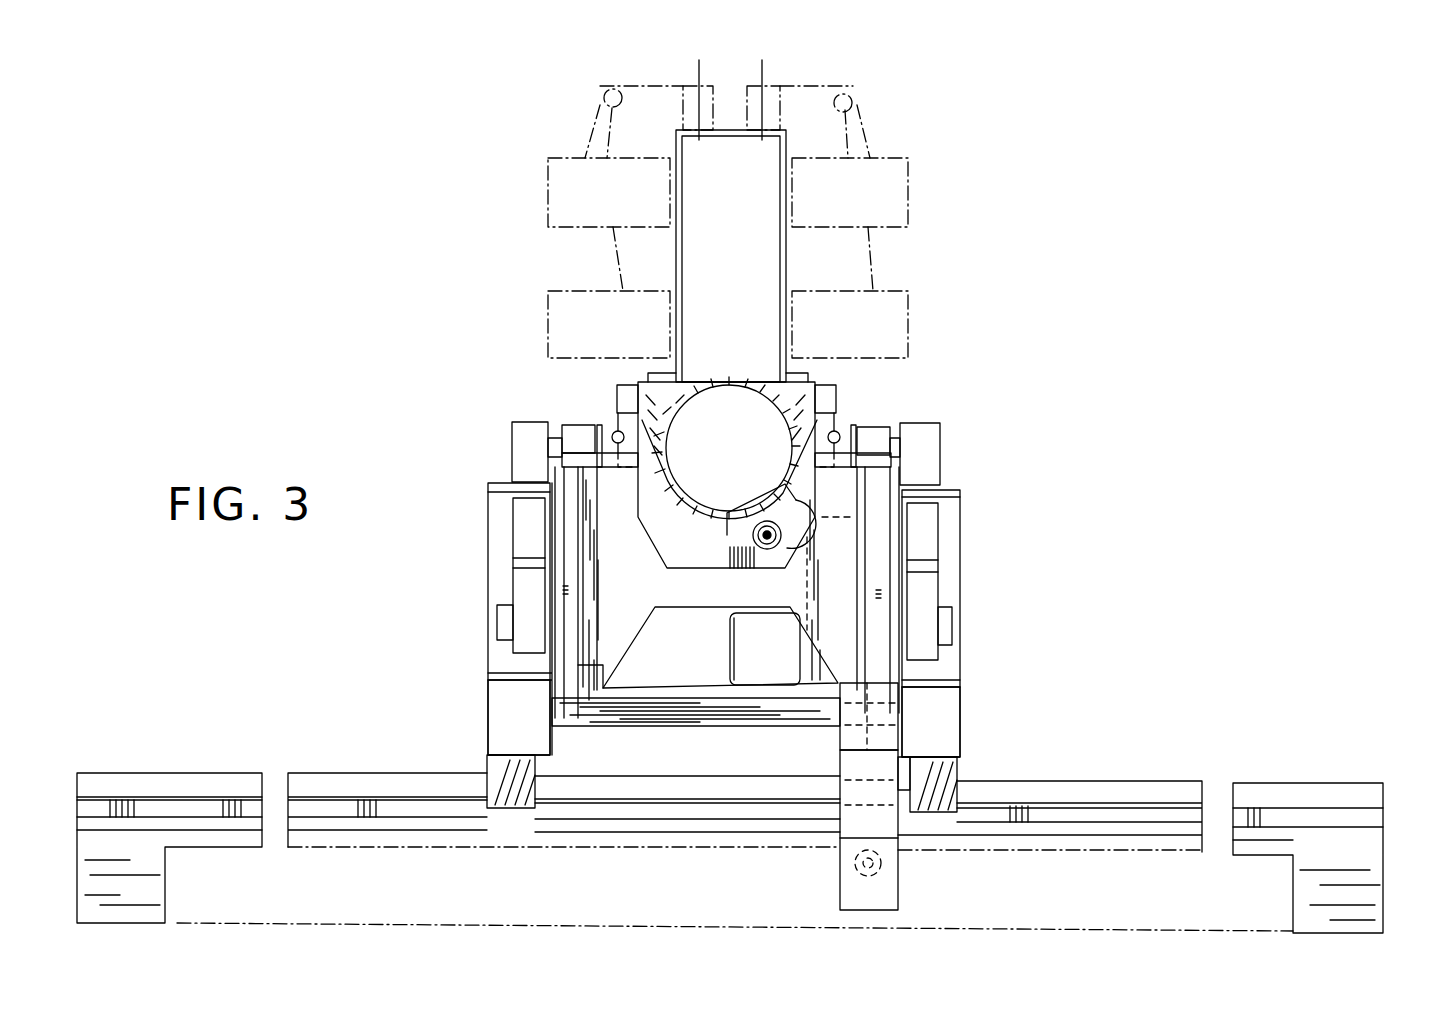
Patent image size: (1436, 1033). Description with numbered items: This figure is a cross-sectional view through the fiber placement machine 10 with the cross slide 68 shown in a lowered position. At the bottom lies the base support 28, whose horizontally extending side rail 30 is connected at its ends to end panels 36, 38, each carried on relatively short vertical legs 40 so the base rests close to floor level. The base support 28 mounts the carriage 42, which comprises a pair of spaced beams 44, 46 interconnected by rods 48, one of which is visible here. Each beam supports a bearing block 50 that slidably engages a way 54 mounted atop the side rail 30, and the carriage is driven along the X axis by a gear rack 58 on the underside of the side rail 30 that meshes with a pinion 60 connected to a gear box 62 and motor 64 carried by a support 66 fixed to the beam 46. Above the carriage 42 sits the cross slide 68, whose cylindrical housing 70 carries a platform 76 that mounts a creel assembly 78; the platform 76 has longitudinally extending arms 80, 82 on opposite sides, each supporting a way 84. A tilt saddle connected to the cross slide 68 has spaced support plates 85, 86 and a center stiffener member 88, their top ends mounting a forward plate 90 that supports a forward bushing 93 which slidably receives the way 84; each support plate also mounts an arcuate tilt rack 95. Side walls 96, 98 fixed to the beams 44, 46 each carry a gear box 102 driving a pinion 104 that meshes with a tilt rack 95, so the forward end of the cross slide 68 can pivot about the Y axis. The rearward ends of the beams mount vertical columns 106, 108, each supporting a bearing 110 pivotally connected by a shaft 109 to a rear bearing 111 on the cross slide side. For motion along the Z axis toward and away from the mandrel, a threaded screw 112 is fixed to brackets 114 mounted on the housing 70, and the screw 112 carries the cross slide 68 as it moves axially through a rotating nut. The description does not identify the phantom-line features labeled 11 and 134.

The fiber placement machine 10 is at (1170, 272).
The phantom pipe section 11 is at (598, 118).
The base support 28 is at (1298, 765).
The side rail 30 is at (1163, 828).
The end panel 36 is at (1383, 828).
The end panel 38 is at (77, 830).
The vertical legs 40 is at (150, 905).
The carriage 42 is at (710, 748).
The beam 44 is at (490, 690).
The beam 46 is at (962, 690).
The rods 48 is at (766, 718).
The bearing block 50 is at (527, 808).
The way 54 is at (1073, 792).
The gear rack 58 is at (935, 856).
The pinion 60 is at (882, 875).
The gear box 62 is at (850, 830).
The motor 64 is at (845, 893).
The support 66 is at (845, 760).
The cross slide 68 is at (872, 392).
The cylindrical housing 70 is at (718, 386).
The platform 76 is at (766, 386).
The creel assembly 78 is at (1003, 175).
The arm 80 is at (617, 430).
The arm 82 is at (834, 430).
The way 84 is at (628, 468).
The support plate 85 is at (602, 668).
The support plate 86 is at (866, 665).
The center stiffener member 88 is at (665, 592).
The forward plate 90 is at (548, 462).
The forward bushing 93 is at (616, 432).
The tilt rack 95 is at (565, 530).
The side wall 96 is at (500, 640).
The side wall 98 is at (905, 615).
The gear box 102 is at (505, 588).
The pinion 104 is at (588, 588).
The vertical column 106 is at (488, 506).
The vertical column 108 is at (962, 515).
The shaft 109 is at (550, 447).
The bearing 110 is at (528, 424).
The rear bearing 111 is at (575, 432).
The screw 112 is at (760, 537).
The brackets 114 is at (743, 522).
The phantom box 134 is at (548, 291).